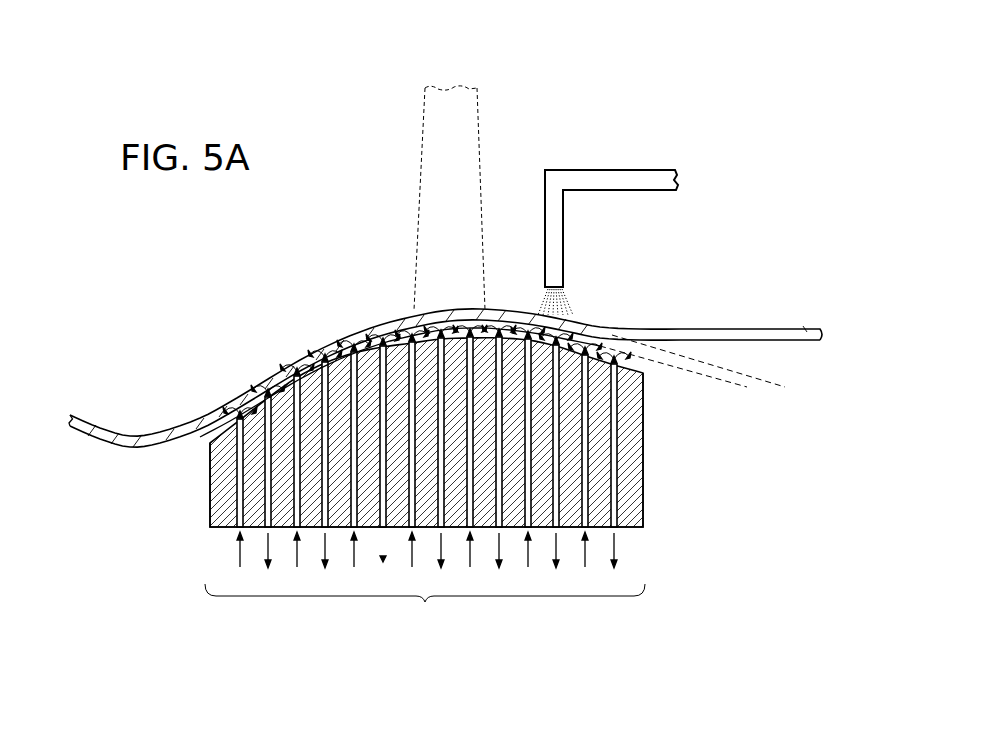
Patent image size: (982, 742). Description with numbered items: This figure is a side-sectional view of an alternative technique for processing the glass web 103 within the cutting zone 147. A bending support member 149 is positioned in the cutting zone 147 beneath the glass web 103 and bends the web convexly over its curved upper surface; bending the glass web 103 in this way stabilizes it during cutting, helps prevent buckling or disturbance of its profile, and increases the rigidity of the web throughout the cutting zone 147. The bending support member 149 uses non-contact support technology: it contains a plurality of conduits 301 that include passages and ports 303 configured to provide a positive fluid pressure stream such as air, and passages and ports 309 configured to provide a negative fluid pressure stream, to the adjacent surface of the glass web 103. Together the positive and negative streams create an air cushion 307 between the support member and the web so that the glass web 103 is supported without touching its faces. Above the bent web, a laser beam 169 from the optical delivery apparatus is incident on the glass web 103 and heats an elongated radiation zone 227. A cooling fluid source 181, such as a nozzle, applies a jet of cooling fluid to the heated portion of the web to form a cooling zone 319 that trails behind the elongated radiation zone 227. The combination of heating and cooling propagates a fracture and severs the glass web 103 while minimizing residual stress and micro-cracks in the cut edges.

The glass web 103 is at (130, 436).
The air cushion 307 is at (208, 438).
The laser beam 169 is at (460, 134).
The elongated radiation zone 227 is at (455, 310).
The cooling fluid source 181 is at (633, 168).
The cooling zone 319 is at (556, 313).
The passages and ports 309 is at (618, 405).
The passages and ports 303 is at (593, 421).
The conduits 301 is at (639, 454).
The bending support member 149 is at (645, 492).
The cutting zone 147 is at (425, 602).